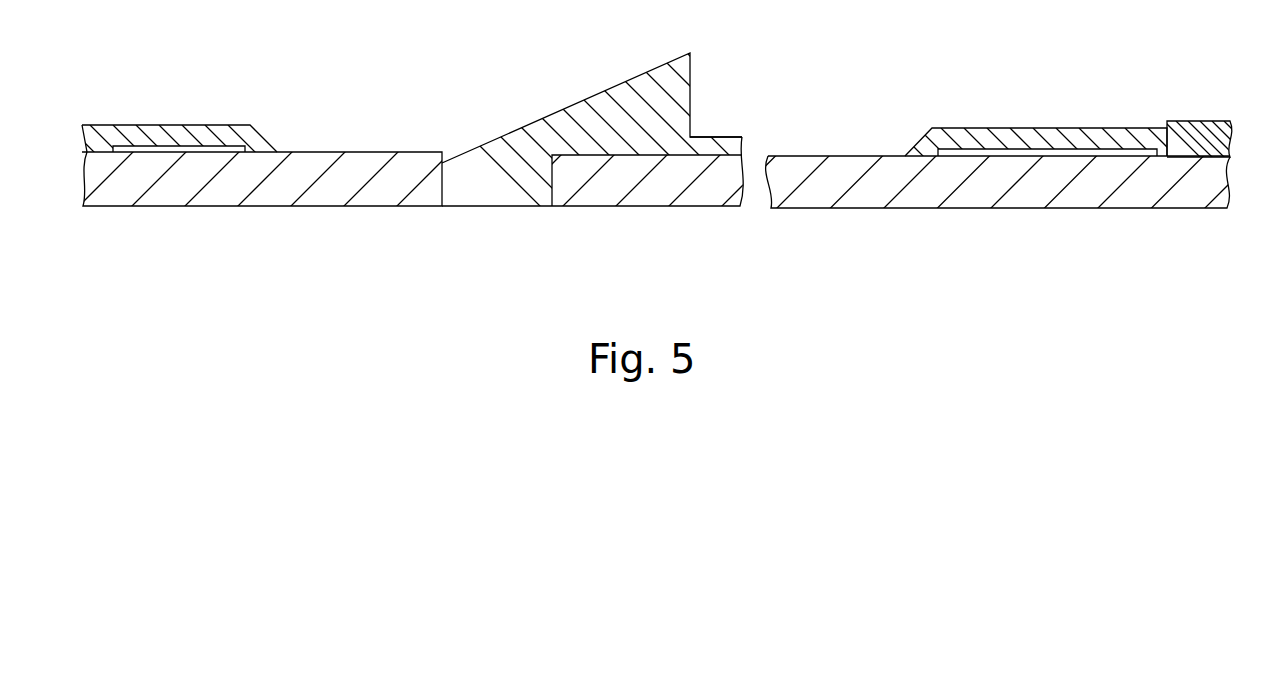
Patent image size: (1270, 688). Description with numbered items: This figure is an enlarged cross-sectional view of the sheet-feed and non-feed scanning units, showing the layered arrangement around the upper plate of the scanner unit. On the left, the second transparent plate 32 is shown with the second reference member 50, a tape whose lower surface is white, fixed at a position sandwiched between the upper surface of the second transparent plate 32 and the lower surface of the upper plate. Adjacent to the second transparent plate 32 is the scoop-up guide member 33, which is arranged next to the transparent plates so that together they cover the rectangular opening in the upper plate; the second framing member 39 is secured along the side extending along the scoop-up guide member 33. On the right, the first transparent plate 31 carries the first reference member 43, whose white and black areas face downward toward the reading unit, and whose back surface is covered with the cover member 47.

The second reference member 50 is at (187, 150).
The scoop-up guide member 33 is at (630, 100).
The second framing member 39 is at (710, 147).
The second transparent plate 32 is at (328, 192).
The first transparent plate 31 is at (865, 192).
The cover member 47 is at (1025, 137).
The first reference member 43 is at (1102, 150).